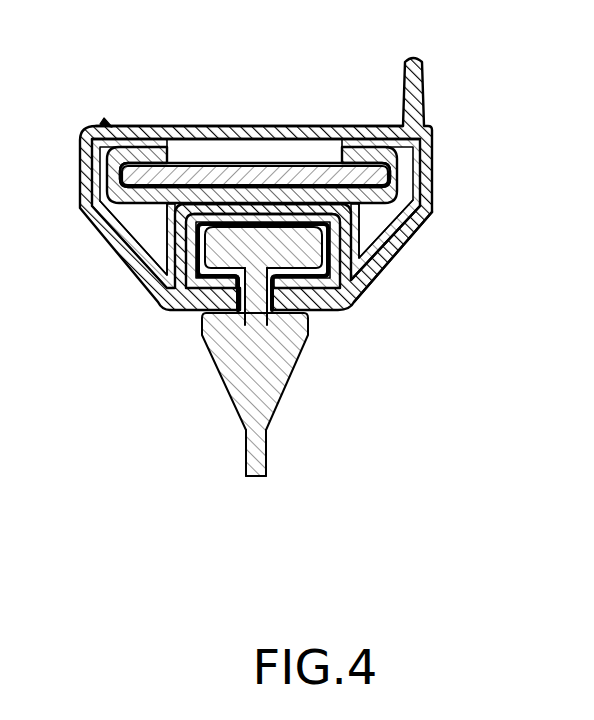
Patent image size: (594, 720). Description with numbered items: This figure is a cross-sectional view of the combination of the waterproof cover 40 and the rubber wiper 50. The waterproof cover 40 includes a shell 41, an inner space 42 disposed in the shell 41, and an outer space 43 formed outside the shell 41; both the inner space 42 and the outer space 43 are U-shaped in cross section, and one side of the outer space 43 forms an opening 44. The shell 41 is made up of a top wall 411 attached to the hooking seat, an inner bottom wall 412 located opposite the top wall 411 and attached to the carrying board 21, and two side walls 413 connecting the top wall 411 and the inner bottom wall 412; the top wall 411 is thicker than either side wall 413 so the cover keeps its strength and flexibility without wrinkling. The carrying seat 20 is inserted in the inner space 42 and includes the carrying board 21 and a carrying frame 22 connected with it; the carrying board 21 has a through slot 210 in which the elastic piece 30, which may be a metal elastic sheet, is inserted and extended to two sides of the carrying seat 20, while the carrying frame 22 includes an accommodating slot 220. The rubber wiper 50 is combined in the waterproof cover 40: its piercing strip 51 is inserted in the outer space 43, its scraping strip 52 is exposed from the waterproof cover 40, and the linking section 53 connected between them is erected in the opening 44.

The carrying seat 20 is at (544, 217).
The carrying board 21 is at (358, 197).
The through slot 210 is at (392, 177).
The carrying frame 22 is at (335, 245).
The accommodating slot 220 is at (185, 280).
The elastic piece 30 is at (318, 175).
The waterproof cover 40 is at (110, 124).
The shell 41 is at (88, 172).
The top wall 411 is at (272, 132).
The inner bottom wall 412 is at (236, 208).
The side wall 413 is at (388, 262).
The inner space 42 is at (132, 222).
The outer space 43 is at (200, 243).
The opening 44 is at (255, 312).
The rubber wiper 50 is at (424, 336).
The piercing strip 51 is at (296, 275).
The scraping strip 52 is at (258, 378).
The linking section 53 is at (281, 313).